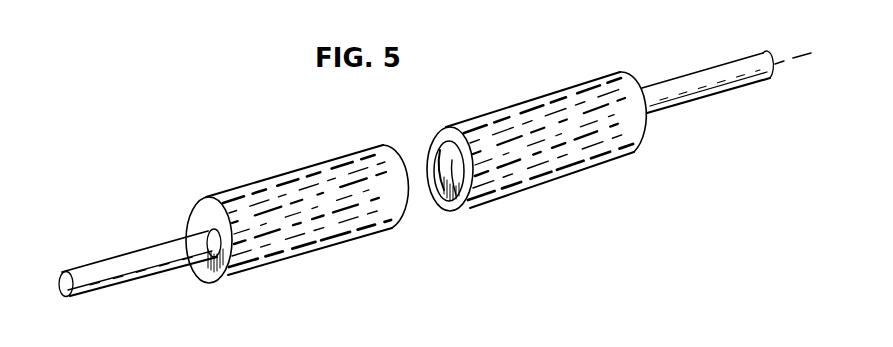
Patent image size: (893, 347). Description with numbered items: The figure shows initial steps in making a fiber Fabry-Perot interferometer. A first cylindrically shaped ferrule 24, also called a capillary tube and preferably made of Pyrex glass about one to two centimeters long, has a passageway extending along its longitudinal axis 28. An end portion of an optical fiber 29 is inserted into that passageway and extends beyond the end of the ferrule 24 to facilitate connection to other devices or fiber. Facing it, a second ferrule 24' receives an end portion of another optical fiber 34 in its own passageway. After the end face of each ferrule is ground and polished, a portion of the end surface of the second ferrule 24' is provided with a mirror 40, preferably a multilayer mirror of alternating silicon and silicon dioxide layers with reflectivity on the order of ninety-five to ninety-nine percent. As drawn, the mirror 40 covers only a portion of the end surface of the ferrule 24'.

The ferrule 24 is at (297, 199).
The second ferrule 24' is at (536, 153).
The longitudinal axis 28 is at (800, 60).
The optical fiber 29 is at (120, 262).
The optical fiber 34 is at (715, 77).
The mirror 40 is at (435, 192).